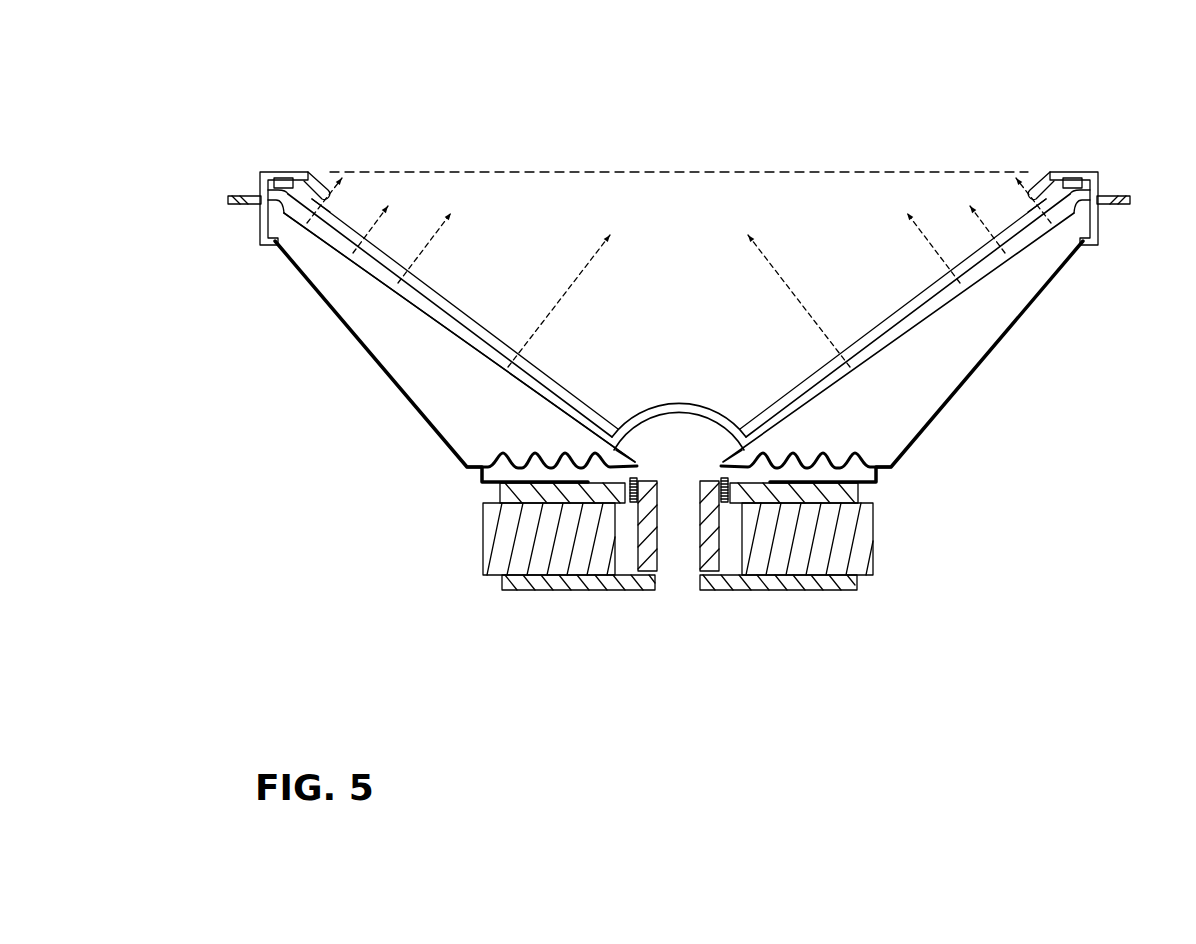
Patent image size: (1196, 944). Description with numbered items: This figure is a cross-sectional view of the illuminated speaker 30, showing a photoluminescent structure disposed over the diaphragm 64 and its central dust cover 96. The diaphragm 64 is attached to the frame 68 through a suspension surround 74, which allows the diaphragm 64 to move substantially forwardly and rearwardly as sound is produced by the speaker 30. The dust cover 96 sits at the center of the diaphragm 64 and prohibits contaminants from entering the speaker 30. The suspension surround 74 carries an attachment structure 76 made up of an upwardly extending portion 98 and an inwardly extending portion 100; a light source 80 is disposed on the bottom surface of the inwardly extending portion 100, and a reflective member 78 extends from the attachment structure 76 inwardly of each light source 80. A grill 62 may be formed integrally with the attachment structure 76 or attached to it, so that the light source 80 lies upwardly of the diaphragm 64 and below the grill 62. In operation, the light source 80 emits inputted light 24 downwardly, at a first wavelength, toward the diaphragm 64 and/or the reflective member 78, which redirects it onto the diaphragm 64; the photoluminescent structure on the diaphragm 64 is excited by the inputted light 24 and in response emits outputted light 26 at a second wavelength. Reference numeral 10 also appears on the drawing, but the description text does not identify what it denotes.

The loudspeaker 10 is at (675, 306).
The inputted light 24 is at (312, 211).
The outputted light 26 is at (437, 230).
The speaker 30 is at (987, 108).
The grill 62 is at (606, 172).
The diaphragm 64 is at (503, 373).
The frame 68 is at (362, 352).
The suspension surround 74 is at (284, 248).
The attachment structure 76 is at (259, 161).
The reflective member 78 is at (320, 178).
The light source 80 is at (278, 173).
The dust cover 96 is at (743, 452).
The upwardly extending portion 98 is at (248, 185).
The inwardly extending portion 100 is at (299, 158).